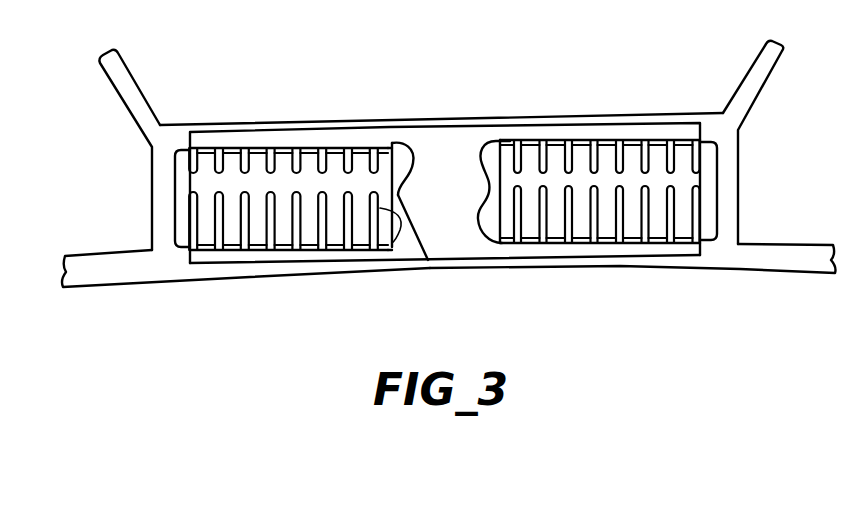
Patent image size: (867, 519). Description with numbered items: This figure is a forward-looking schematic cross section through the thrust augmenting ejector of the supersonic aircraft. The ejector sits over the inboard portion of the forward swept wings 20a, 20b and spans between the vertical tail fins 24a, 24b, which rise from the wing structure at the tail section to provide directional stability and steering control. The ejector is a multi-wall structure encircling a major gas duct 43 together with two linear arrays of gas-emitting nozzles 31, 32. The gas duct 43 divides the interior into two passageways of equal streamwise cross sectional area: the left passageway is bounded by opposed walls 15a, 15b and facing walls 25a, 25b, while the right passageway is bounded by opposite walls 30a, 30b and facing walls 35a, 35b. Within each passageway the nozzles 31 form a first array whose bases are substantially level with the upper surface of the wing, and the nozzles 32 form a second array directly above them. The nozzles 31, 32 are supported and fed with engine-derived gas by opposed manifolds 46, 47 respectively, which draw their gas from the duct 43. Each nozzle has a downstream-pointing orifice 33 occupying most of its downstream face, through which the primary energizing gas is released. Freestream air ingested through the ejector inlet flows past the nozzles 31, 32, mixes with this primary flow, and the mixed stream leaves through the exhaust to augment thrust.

The opposed wall 15a is at (178, 200).
The opposed wall 15b is at (389, 252).
The forward swept wing 20a is at (109, 275).
The forward swept wing 20b is at (805, 257).
The vertical tail fin 24a is at (130, 87).
The vertical tail fin 24b is at (748, 92).
The facing wall 25a is at (259, 147).
The facing wall 25b is at (206, 250).
The opposite wall 30a is at (606, 141).
The opposite wall 30b is at (692, 258).
The nozzles 31 is at (318, 233).
The nozzles 32 is at (350, 146).
The orifice 33 is at (394, 200).
The facing wall 35a is at (512, 247).
The facing wall 35b is at (712, 185).
The gas duct 43 is at (414, 186).
The manifold 46 is at (587, 252).
The manifold 47 is at (525, 139).